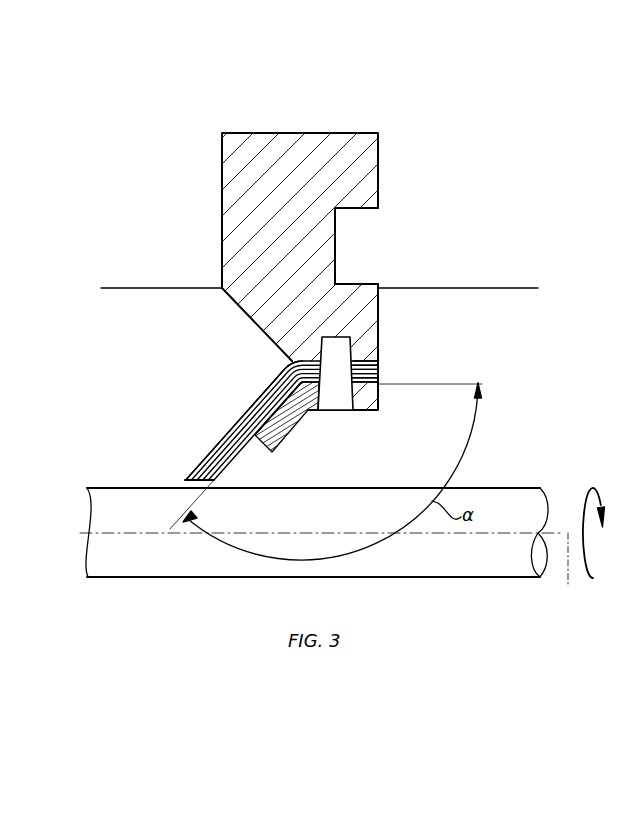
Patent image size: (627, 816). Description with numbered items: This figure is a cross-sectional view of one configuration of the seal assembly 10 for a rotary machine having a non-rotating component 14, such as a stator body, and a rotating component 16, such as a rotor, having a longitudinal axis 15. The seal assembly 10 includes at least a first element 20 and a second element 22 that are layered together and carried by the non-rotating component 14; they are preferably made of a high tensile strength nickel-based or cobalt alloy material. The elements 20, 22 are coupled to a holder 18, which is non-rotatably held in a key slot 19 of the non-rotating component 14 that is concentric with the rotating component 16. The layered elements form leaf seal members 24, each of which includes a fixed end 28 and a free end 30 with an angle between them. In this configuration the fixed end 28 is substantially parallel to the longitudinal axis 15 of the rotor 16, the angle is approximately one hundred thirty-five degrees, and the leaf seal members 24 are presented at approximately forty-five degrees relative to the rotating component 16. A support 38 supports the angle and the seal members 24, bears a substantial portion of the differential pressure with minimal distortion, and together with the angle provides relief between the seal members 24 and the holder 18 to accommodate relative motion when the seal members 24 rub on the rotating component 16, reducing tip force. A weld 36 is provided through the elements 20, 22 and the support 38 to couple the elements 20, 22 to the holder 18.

The seal assembly 10 is at (522, 247).
The non-rotating component 14 is at (151, 213).
The longitudinal axis 15 is at (578, 550).
The rotating component 16 is at (343, 523).
The holder 18 is at (357, 173).
The key slot 19 is at (336, 247).
The first element 20 is at (192, 470).
The second element 22 is at (198, 487).
The leaf seal member 24 is at (268, 392).
The fixed end 28 is at (373, 373).
The free end 30 is at (232, 438).
The weld 36 is at (338, 402).
The support 38 is at (290, 415).